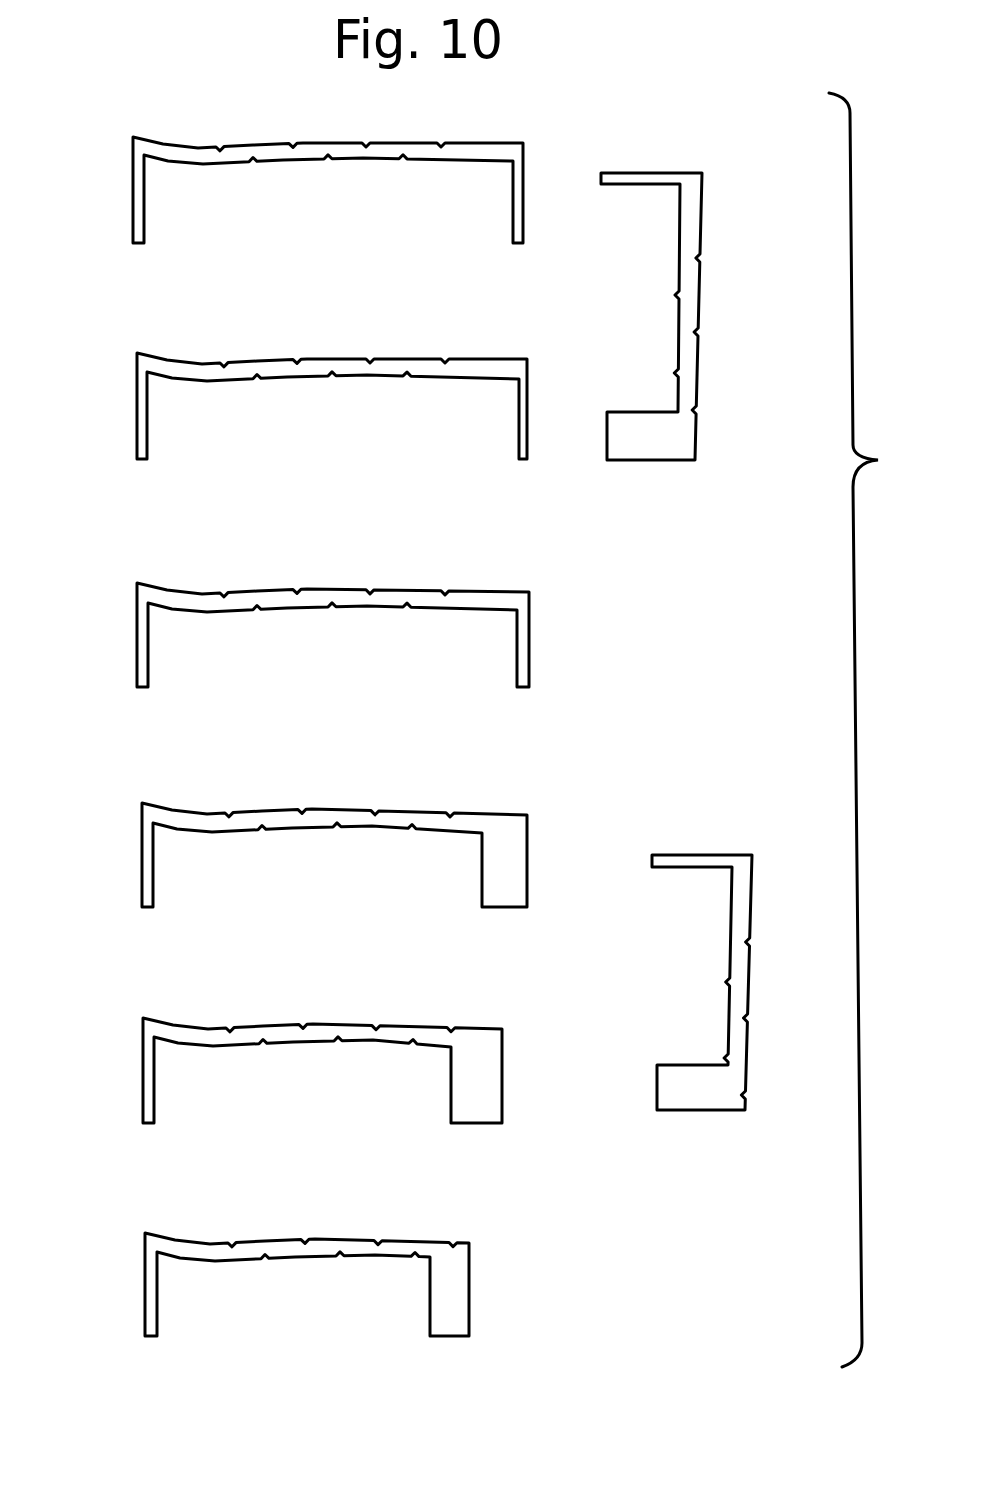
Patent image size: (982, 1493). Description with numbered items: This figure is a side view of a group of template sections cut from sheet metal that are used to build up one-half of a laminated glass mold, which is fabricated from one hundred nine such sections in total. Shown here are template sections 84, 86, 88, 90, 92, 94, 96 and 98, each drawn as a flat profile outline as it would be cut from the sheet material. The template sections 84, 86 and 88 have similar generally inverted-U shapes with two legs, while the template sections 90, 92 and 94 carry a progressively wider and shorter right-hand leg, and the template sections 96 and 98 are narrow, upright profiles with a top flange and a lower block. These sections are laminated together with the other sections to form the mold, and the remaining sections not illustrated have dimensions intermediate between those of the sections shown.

The template section 84 is at (133, 176).
The template section 86 is at (137, 389).
The template section 88 is at (137, 621).
The template section 90 is at (142, 840).
The template section 92 is at (143, 1063).
The template section 94 is at (145, 1275).
The template section 96 is at (675, 173).
The template section 98 is at (718, 855).